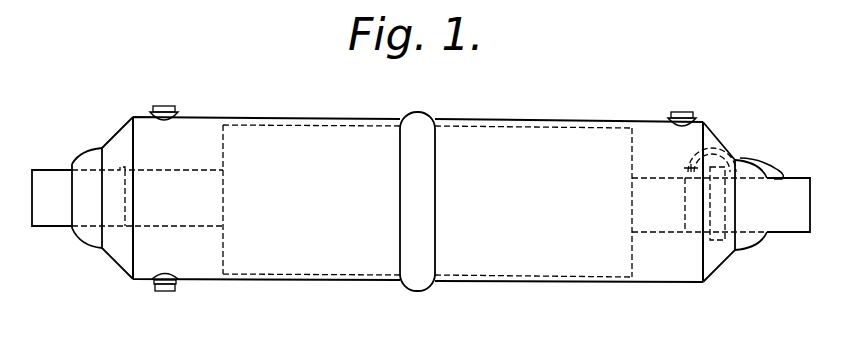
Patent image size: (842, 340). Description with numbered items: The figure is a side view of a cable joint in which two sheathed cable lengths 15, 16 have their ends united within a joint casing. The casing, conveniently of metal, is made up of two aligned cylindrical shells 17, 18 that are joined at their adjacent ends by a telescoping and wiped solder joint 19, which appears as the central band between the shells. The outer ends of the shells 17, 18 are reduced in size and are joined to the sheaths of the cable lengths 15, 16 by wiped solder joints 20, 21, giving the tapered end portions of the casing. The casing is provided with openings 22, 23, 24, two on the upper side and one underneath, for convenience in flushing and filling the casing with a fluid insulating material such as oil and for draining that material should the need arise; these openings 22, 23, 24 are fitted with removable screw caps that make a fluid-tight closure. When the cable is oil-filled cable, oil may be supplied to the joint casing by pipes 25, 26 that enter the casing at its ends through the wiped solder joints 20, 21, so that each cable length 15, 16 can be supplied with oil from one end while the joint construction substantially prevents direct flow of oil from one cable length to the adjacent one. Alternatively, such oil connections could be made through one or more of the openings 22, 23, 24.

The sheathed cable length 15 is at (48, 216).
The sheathed cable length 16 is at (800, 222).
The cylindrical shell 17 is at (335, 118).
The cylindrical shell 18 is at (525, 119).
The telescoping and wiped solder joint 19 is at (428, 114).
The wiped solder joint 20 is at (93, 247).
The wiped solder joint 21 is at (752, 246).
The opening 22 is at (166, 105).
The opening 23 is at (681, 110).
The opening 24 is at (163, 292).
The pipe 25 is at (70, 165).
The pipe 26 is at (784, 172).